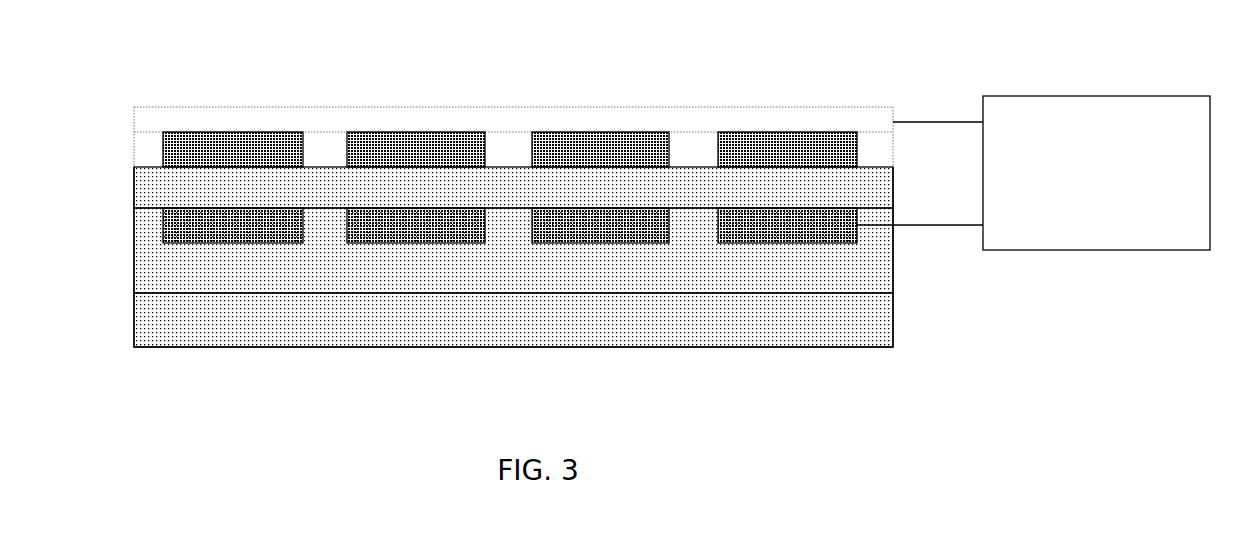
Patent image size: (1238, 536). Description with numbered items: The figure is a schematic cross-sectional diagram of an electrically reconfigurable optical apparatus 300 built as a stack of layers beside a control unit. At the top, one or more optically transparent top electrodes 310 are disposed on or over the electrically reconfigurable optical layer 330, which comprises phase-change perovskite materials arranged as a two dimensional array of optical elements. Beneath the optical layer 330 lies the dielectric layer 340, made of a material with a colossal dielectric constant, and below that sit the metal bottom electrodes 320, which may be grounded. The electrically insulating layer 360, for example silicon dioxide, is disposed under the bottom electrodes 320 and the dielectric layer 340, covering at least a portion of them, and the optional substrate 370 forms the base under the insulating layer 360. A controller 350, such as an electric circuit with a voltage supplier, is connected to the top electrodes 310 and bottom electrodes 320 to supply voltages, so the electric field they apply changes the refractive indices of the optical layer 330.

The electrically reconfigurable optical apparatus 300 is at (31, 53).
The top electrodes 310 is at (143, 120).
The bottom electrodes 320 is at (157, 225).
The electrically reconfigurable optical layer 330 is at (162, 148).
The dielectric layer 340 is at (140, 185).
The controller 350 is at (1115, 245).
The electrically insulating layer 360 is at (157, 268).
The substrate 370 is at (157, 320).